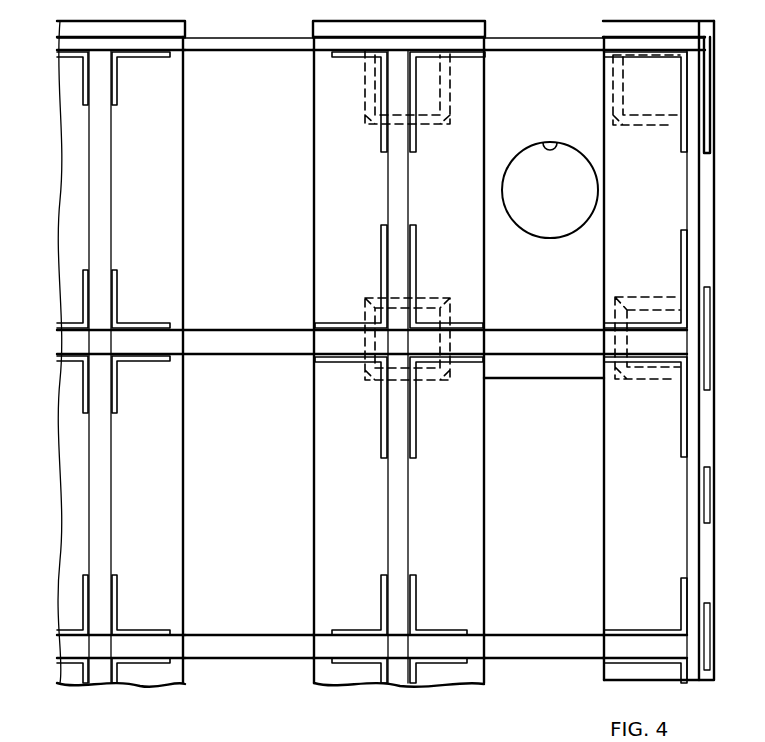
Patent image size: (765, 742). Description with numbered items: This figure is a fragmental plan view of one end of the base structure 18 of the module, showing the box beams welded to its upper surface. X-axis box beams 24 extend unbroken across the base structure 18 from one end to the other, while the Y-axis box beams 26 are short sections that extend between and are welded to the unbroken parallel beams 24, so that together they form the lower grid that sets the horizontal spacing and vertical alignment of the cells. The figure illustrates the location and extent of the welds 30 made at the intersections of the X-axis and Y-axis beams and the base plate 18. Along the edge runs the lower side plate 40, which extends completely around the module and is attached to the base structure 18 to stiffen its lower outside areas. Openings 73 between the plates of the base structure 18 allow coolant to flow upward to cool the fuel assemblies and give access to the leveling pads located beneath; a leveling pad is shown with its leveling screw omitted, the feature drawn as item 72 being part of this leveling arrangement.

The base structure 18 is at (703, 212).
The X-axis box beams 24 is at (241, 330).
The Y-axis box beams 26 is at (103, 200).
The welds 30 is at (380, 85).
The lower side plate 40 is at (257, 40).
The aperture 72 is at (548, 143).
The openings 73 is at (240, 58).